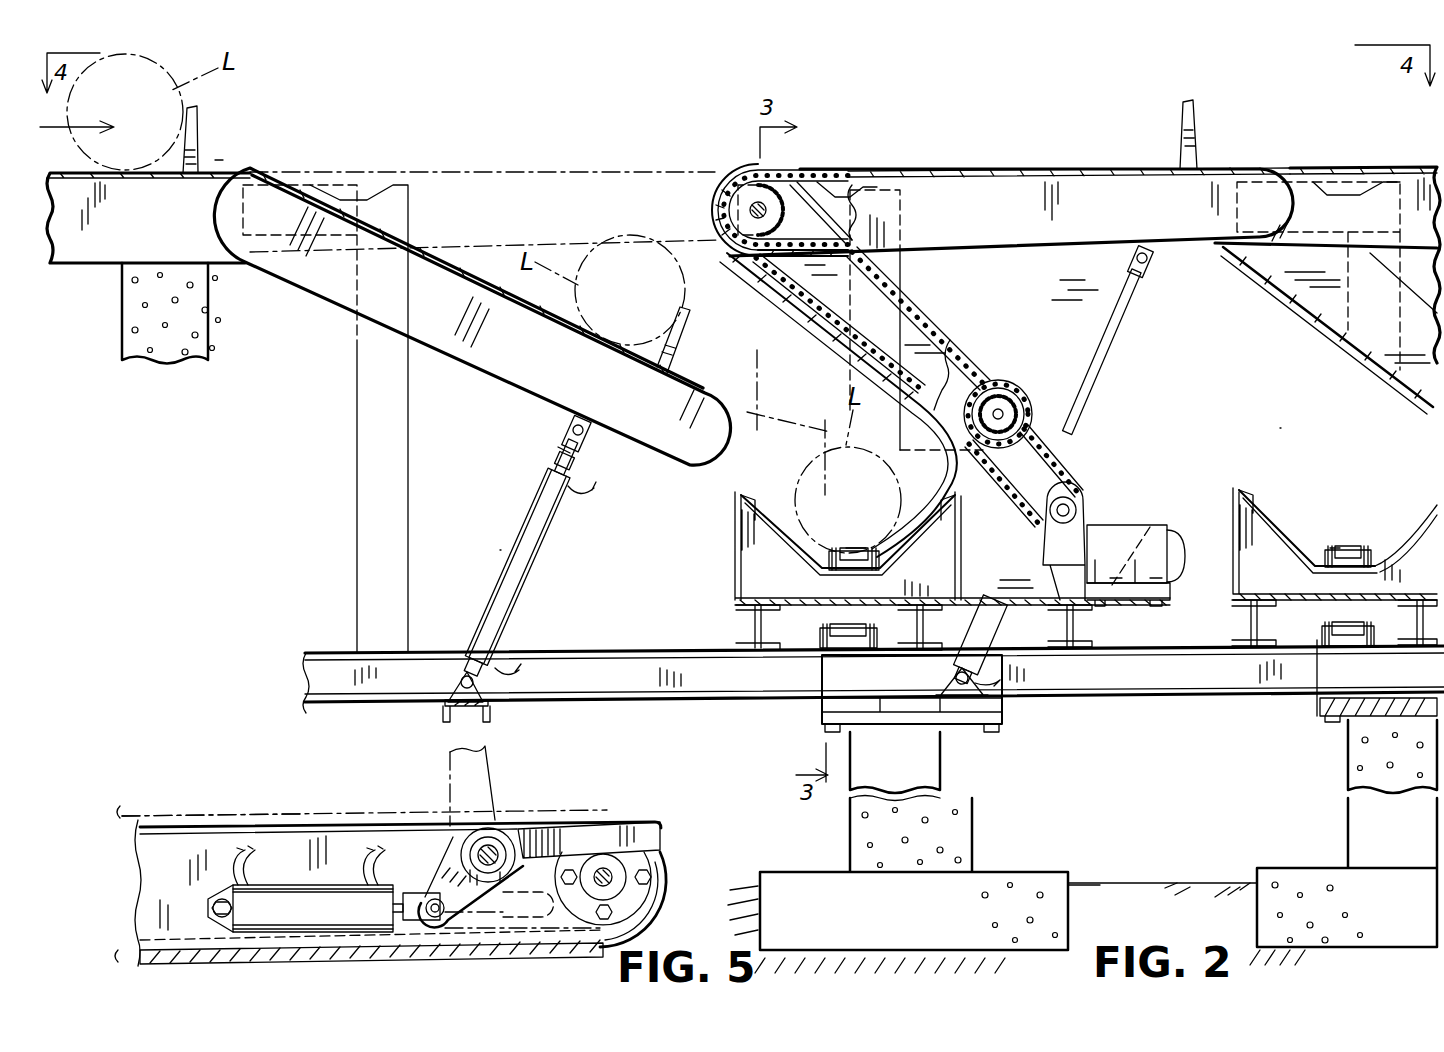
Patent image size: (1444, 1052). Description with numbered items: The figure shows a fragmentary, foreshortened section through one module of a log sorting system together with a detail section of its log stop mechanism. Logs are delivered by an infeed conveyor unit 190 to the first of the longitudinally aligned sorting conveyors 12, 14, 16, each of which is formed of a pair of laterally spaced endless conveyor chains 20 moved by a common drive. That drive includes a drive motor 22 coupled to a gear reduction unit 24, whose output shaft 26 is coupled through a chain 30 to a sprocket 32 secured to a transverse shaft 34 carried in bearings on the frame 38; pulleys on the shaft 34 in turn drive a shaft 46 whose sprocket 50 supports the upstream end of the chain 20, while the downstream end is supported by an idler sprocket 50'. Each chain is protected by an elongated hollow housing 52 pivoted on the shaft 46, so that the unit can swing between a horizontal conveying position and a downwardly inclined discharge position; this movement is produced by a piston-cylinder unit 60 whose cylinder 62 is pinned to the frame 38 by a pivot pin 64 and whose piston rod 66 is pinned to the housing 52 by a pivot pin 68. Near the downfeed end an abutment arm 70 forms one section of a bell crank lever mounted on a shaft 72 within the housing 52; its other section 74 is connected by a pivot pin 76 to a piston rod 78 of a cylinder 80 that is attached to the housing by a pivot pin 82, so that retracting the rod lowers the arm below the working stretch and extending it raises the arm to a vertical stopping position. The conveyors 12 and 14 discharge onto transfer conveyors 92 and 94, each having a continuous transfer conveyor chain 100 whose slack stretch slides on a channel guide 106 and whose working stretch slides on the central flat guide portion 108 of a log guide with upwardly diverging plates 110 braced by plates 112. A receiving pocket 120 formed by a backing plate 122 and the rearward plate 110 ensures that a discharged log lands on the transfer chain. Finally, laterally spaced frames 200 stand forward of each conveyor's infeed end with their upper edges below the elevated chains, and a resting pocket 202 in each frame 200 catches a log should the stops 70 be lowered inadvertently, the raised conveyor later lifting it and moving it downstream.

In FIG. 2, the sorting conveyor 12 is at (475, 156).
In FIG. 2, the sorting conveyor 14 is at (982, 156).
In FIG. 2, the sorting conveyor 16 is at (1310, 152).
In FIG. 2, the endless conveyor chain 20 is at (826, 176).
In FIG. 5, the endless conveyor chain 20 is at (186, 812).
In FIG. 2, the drive motor 22 is at (1150, 532).
In FIG. 2, the gear reduction unit 24 is at (1047, 545).
In FIG. 2, the output shaft 26 is at (1077, 507).
In FIG. 2, the chain 30 is at (1066, 478).
In FIG. 2, the sprocket 32 is at (1035, 425).
In FIG. 2, the transverse shaft 34 is at (1004, 392).
In FIG. 2, the frame 38 is at (735, 628).
In FIG. 2, the shaft 46 is at (752, 202).
In FIG. 2, the sprocket 50 is at (772, 185).
In FIG. 5, the idler sprocket 50' is at (576, 890).
In FIG. 2, the housing 52 is at (452, 348).
In FIG. 5, the housing 52 is at (266, 845).
In FIG. 2, the piston-cylinder unit 60 is at (490, 550).
In FIG. 2, the cylinder 62 is at (515, 588).
In FIG. 2, the pivot pin 64 is at (460, 665).
In FIG. 2, the piston rod 66 is at (557, 455).
In FIG. 2, the pivot pin 68 is at (584, 440).
In FIG. 2, the abutment arm 70 is at (197, 122).
In FIG. 5, the abutment arm 70 is at (493, 778).
In FIG. 5, the shaft 72 is at (493, 838).
In FIG. 5, the bell crank lever section 74 is at (448, 868).
In FIG. 5, the pivot pin 76 is at (444, 912).
In FIG. 5, the piston rod 78 is at (400, 932).
In FIG. 5, the cylinder 80 is at (332, 888).
In FIG. 5, the pivot pin 82 is at (210, 905).
In FIG. 2, the transfer conveyor 92 is at (862, 536).
In FIG. 2, the transfer conveyor 94 is at (1336, 530).
In FIG. 2, the transfer conveyor chain 100 is at (1365, 540).
In FIG. 2, the channel guide 106 is at (820, 634).
In FIG. 2, the central flat guide portion 108 is at (835, 572).
In FIG. 2, the plates 110 is at (760, 522).
In FIG. 2, the plates 112 is at (733, 545).
In FIG. 2, the receiving pocket 120 is at (1275, 410).
In FIG. 2, the backing plate 122 is at (828, 325).
In FIG. 2, the infeed conveyor unit 190 is at (233, 156).
In FIG. 2, the frame 200 is at (398, 200).
In FIG. 2, the resting pocket 202 is at (358, 190).